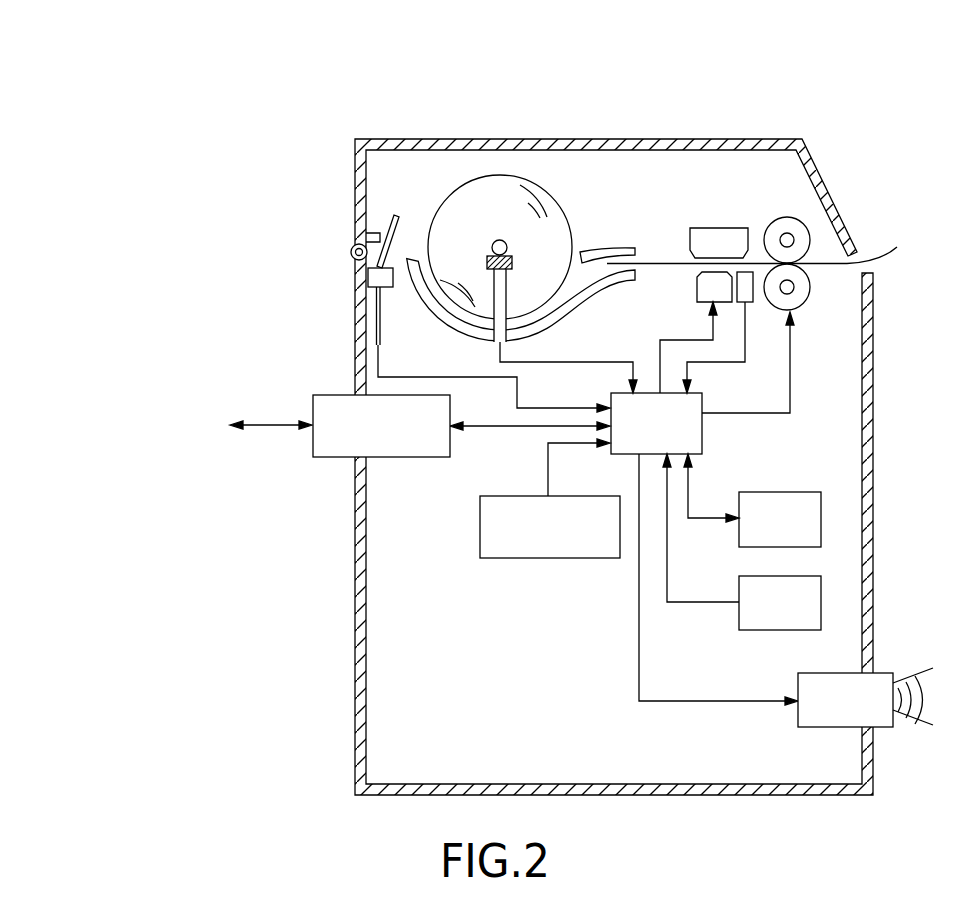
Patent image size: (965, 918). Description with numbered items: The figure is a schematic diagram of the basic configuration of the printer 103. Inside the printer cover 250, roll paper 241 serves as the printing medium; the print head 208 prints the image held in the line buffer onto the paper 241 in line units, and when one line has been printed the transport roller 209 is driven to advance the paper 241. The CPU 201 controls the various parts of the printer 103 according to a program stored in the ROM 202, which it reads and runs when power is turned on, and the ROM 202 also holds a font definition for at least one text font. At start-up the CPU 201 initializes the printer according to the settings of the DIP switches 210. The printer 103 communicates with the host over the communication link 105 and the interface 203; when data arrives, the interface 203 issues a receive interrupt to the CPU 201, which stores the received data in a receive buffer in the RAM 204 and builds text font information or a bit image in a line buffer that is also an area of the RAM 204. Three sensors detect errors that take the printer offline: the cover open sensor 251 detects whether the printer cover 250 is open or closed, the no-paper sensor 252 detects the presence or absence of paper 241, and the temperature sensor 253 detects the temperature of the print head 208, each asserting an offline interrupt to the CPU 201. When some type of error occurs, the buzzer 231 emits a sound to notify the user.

The printer 103 is at (619, 423).
The printer cover 250 is at (813, 153).
The paper 241 is at (571, 214).
The no-paper sensor 252 is at (513, 257).
The cover open sensor 251 is at (388, 288).
The print head 208 is at (695, 294).
The temperature sensor 253 is at (753, 303).
The transport roller 209 is at (803, 300).
The communication link 105 is at (270, 423).
The interface 203 is at (410, 457).
The CPU 201 is at (702, 451).
The RAM 204 is at (800, 492).
The ROM 202 is at (800, 576).
The DIP switches 210 is at (533, 558).
The buzzer 231 is at (810, 727).